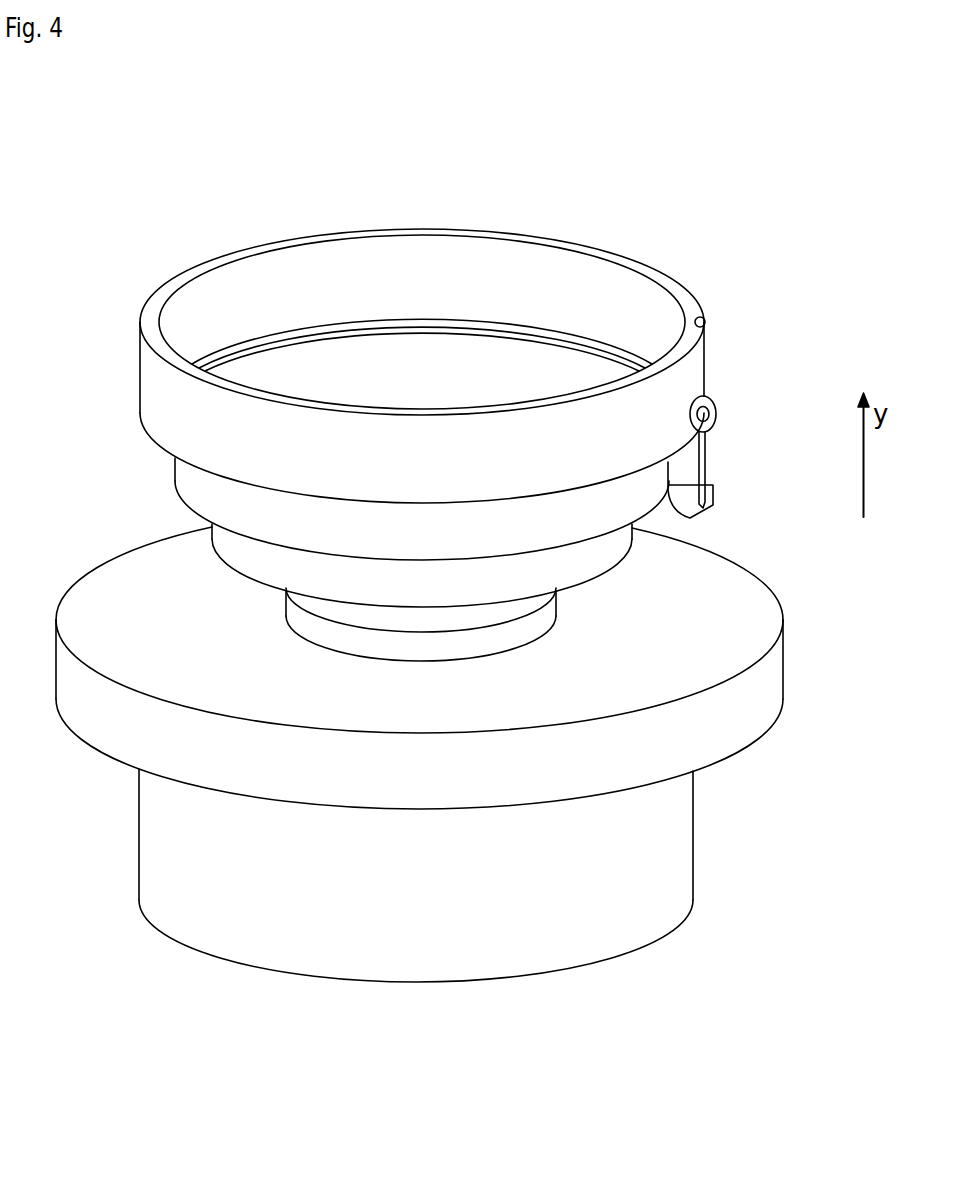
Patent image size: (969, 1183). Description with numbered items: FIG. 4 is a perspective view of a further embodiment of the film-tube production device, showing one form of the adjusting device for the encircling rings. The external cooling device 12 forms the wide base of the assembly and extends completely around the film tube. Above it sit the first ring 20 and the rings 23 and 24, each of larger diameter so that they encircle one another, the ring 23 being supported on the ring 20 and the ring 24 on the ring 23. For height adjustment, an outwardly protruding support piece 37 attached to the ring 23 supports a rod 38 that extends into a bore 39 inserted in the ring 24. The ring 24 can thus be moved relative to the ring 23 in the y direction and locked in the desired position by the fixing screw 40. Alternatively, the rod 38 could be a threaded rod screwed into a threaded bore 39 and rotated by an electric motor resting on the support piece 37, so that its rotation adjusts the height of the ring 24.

The external cooling device 12 is at (737, 610).
The first ring 20 is at (577, 568).
The ring 23 is at (627, 508).
The ring 24 is at (693, 365).
The support piece 37 is at (710, 485).
The rod 38 is at (707, 457).
The bore 39 is at (704, 318).
The fixing screw 40 is at (717, 413).